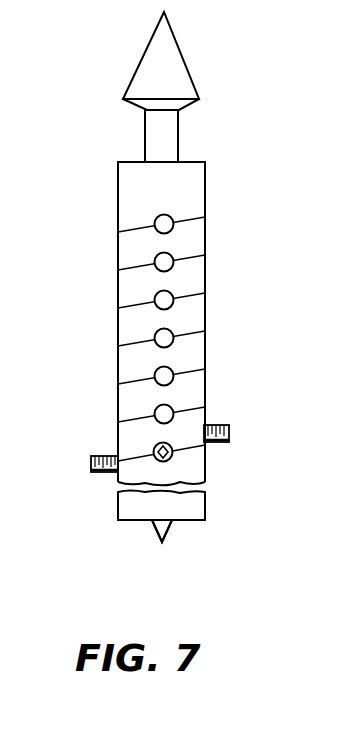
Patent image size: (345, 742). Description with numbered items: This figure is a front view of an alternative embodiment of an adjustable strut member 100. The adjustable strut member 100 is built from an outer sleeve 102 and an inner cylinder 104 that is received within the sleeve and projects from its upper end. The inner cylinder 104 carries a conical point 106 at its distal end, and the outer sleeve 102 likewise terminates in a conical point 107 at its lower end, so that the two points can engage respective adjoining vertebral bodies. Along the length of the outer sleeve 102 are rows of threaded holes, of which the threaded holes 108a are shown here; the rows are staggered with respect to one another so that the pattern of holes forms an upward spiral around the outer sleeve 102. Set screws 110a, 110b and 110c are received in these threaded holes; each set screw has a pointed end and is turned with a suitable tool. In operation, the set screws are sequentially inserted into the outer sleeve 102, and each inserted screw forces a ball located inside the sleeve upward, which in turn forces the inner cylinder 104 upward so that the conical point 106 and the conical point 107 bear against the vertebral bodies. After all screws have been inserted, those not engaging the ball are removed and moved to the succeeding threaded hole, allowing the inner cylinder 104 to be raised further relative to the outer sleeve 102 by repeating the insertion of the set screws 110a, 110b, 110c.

The adjustable strut member 100 is at (86, 222).
The outer sleeve 102 is at (122, 357).
The inner cylinder 104 is at (170, 137).
The conical point 106 is at (172, 53).
The conical point 107 is at (152, 532).
The threaded holes 108a is at (156, 304).
The set screw 110a is at (158, 448).
The set screw 110b is at (91, 464).
The set screw 110c is at (229, 437).